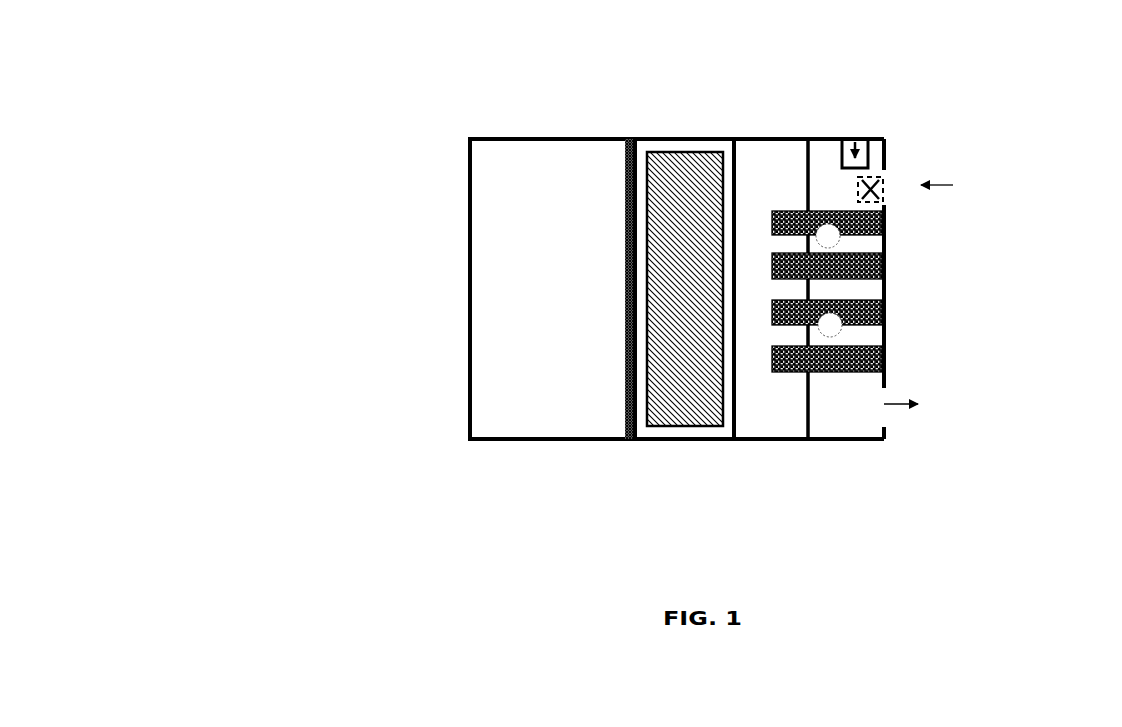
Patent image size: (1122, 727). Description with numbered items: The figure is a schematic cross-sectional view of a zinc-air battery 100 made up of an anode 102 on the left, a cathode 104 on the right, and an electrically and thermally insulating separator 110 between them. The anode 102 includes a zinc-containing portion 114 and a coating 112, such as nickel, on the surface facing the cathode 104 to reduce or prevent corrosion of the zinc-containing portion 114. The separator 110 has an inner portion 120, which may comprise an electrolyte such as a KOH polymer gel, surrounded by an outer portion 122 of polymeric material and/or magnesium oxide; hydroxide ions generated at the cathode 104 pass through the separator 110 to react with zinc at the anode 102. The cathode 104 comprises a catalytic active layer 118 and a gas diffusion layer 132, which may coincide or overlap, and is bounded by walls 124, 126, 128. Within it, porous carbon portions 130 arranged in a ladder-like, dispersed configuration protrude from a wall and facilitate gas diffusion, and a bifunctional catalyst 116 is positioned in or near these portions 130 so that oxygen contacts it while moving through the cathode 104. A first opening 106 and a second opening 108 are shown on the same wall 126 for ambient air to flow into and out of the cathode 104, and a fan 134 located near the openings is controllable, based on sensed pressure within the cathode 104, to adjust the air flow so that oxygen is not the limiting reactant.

The zinc-air battery 100 is at (311, 125).
The anode 102 is at (461, 226).
The cathode 104 is at (828, 131).
The first opening 106 is at (893, 166).
The second opening 108 is at (892, 416).
The separator 110 is at (688, 133).
The coating 112 is at (626, 139).
The zinc-containing portion 114 is at (547, 428).
The bifunctional catalyst 116 is at (840, 236).
The catalytic active layer 118 is at (843, 420).
The inner portion 120 is at (677, 410).
The outer portion 122 is at (648, 437).
The wall 124 is at (795, 139).
The wall 126 is at (884, 290).
The wall 128 is at (770, 440).
The portions 130 is at (873, 352).
The gas diffusion layer 132 is at (760, 160).
The fan 134 is at (896, 191).